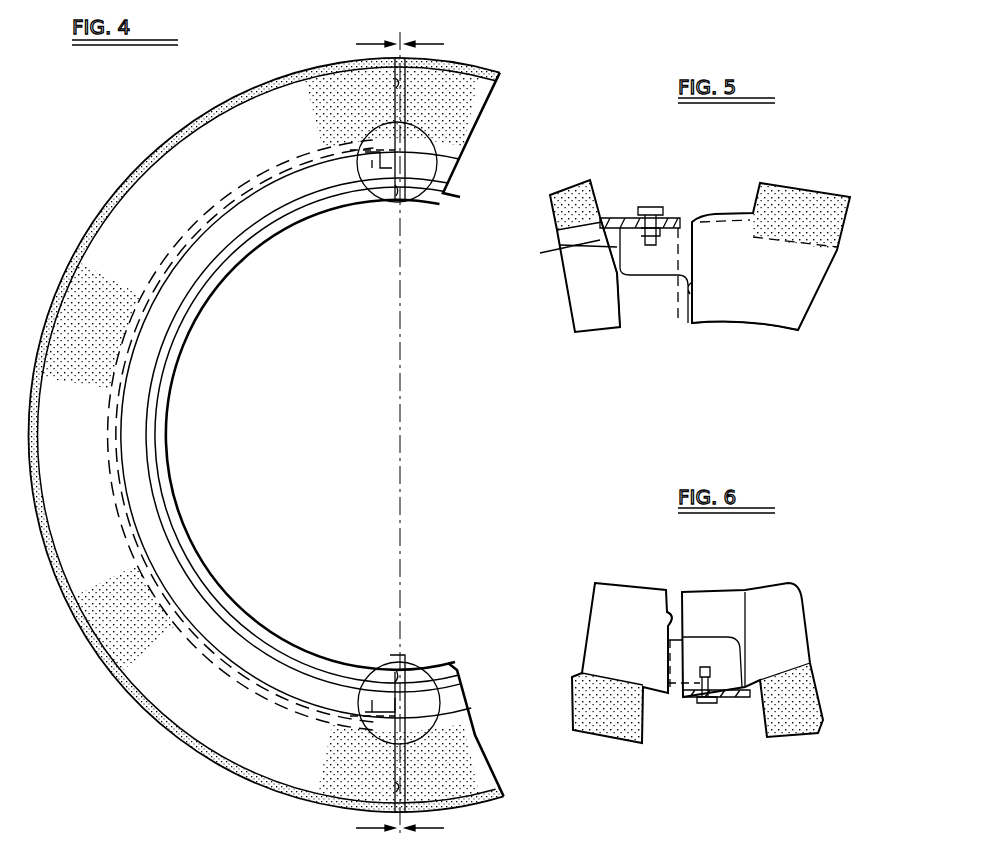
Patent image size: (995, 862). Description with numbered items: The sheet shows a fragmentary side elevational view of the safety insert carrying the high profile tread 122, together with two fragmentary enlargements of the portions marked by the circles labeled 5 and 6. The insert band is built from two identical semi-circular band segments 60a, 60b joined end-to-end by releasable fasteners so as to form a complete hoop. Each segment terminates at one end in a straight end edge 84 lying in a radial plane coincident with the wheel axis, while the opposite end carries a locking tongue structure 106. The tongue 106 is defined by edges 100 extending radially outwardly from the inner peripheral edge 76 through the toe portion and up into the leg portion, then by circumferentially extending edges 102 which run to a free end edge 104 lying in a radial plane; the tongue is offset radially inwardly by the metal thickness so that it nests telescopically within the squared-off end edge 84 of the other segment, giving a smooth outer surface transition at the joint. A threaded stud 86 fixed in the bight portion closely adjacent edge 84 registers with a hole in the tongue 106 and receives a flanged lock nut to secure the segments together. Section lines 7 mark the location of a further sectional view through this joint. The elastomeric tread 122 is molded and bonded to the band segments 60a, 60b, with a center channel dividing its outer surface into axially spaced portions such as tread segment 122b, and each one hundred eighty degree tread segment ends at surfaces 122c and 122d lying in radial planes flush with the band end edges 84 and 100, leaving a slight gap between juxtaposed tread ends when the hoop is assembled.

In FIG. 4, the high profile tread 122 is at (112, 192).
In FIG. 4, the tread segment 122b is at (176, 152).
In FIG. 4, the tread end surface 122c is at (392, 80).
In FIG. 4, the tread end surface 122d is at (392, 787).
In FIG. 4, the band segment 60a is at (210, 317).
In FIG. 5, the band segment 60a is at (562, 306).
In FIG. 4, the band segment 60b is at (456, 190).
In FIG. 5, the band segment 60b is at (822, 318).
In FIG. 6, the band segment 60b is at (585, 592).
In FIG. 4, the locking tongue structure 106 is at (308, 153).
In FIG. 5, the locking tongue structure 106 is at (636, 322).
In FIG. 6, the locking tongue structure 106 is at (728, 638).
In FIG. 4, the straight end edge 84 is at (398, 205).
In FIG. 5, the straight end edge 84 is at (683, 312).
In FIG. 6, the straight end edge 84 is at (678, 605).
In FIG. 4, the tongue edge 100 is at (372, 670).
In FIG. 5, the tongue edge 100 is at (690, 287).
In FIG. 6, the tongue edge 100 is at (665, 607).
In FIG. 5, the circumferentially extending edge 102 is at (690, 270).
In FIG. 6, the circumferentially extending edge 102 is at (680, 648).
In FIG. 5, the free end edge 104 is at (598, 236).
In FIG. 6, the free end edge 104 is at (748, 656).
In FIG. 5, the threaded stud 86 is at (650, 207).
In FIG. 6, the threaded stud 86 is at (705, 712).
In FIG. 5, the inner peripheral edge 76 is at (745, 326).
In FIG. 5, the section line 7 is at (606, 200).
In FIG. 4, the detail circle 5 is at (410, 205).
In FIG. 4, the detail circle 6 is at (424, 664).